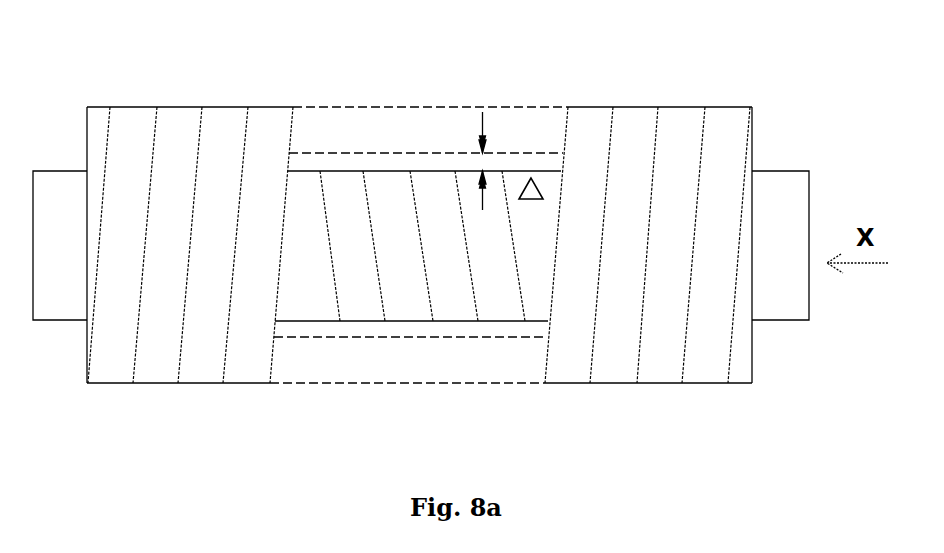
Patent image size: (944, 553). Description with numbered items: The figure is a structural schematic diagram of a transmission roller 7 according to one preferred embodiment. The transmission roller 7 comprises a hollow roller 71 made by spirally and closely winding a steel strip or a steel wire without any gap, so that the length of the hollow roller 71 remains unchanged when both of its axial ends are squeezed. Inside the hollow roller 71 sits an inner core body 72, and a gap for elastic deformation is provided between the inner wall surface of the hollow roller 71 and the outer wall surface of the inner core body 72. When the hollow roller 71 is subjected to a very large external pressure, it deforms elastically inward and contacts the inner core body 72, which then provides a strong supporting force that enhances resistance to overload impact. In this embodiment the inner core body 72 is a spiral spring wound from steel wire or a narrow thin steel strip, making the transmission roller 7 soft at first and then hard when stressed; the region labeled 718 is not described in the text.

The transmission roller 7 is at (429, 72).
The hollow roller 71 is at (187, 192).
The inner core body 72 is at (348, 202).
The end portion of roller body 718 is at (642, 148).